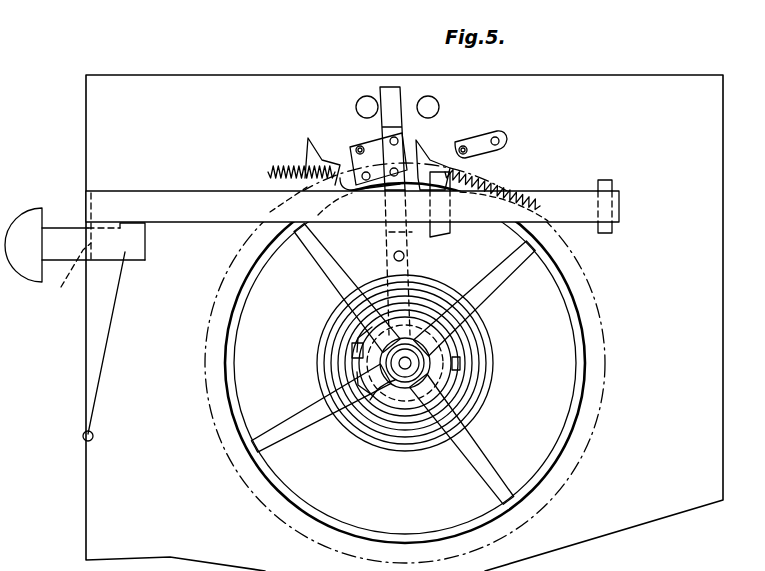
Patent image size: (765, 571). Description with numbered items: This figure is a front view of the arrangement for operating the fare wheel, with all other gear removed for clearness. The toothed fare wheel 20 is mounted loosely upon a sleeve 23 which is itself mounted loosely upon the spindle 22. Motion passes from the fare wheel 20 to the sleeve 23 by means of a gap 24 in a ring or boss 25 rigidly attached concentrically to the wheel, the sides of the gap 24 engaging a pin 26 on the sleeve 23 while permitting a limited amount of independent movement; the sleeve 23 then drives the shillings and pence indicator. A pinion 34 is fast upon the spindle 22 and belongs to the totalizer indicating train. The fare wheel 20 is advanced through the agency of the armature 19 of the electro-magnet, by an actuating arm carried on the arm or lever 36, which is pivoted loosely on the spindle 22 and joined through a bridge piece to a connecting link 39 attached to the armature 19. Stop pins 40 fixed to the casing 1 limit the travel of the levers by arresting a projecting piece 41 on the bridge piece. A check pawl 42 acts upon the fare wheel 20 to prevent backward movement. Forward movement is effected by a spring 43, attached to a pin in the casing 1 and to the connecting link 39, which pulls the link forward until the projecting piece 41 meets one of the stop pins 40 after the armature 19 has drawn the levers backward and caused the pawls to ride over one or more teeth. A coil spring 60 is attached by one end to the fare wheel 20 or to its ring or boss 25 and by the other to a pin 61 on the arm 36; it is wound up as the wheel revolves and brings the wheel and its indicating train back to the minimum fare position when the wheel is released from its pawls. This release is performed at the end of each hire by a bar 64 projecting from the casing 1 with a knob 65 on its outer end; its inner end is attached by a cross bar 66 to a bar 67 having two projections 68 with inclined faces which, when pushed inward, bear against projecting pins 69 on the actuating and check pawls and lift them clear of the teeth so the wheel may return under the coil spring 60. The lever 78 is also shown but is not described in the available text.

The casing 1 is at (404, 323).
The armature 19 is at (450, 227).
The fare wheel 20 is at (323, 247).
The spindle 22 is at (410, 363).
The sleeve 23 is at (397, 393).
The gap 24 is at (350, 360).
The ring or boss 25 is at (355, 340).
The pin 26 is at (370, 377).
The pinion 34 is at (370, 140).
The arm or lever 36 is at (395, 230).
The connecting link 39 is at (470, 180).
The stop pins 40 is at (364, 96).
The projecting piece 41 is at (393, 95).
The check pawl 42 is at (482, 133).
The spring 43 is at (268, 172).
The coil spring 60 is at (488, 388).
The pin 61 is at (404, 256).
The bar 64 is at (65, 235).
The knob 65 is at (23, 227).
The cross bar 66 is at (69, 277).
The bar 67 is at (155, 203).
The projections 68 is at (308, 147).
The projecting pins 69 is at (352, 145).
The lever 78 is at (110, 330).